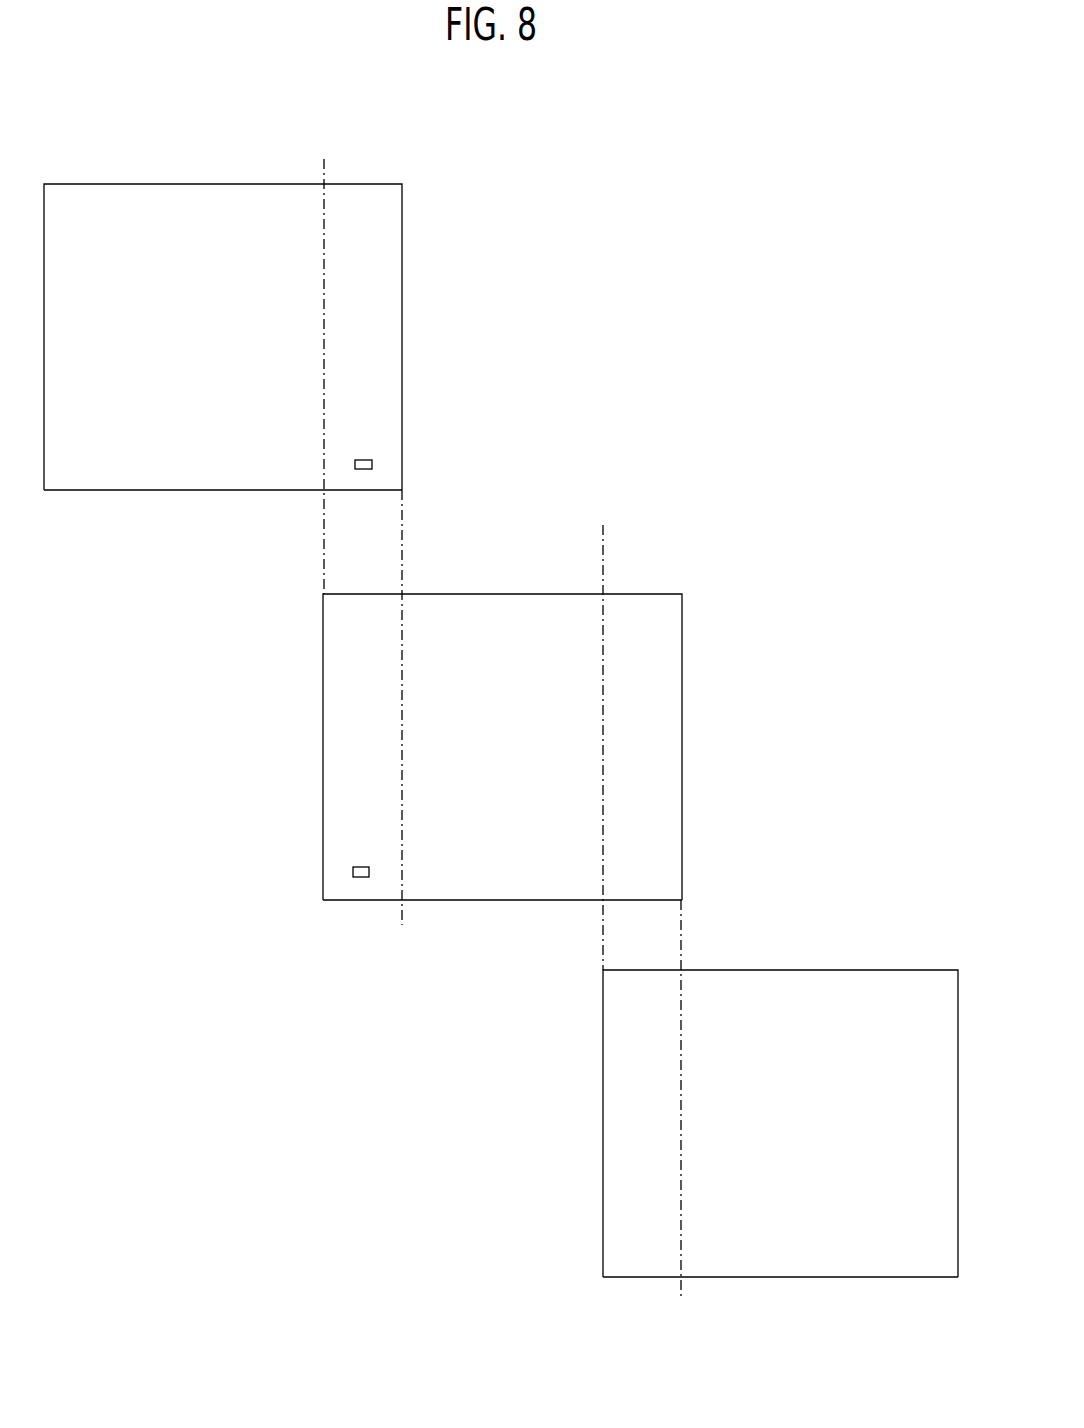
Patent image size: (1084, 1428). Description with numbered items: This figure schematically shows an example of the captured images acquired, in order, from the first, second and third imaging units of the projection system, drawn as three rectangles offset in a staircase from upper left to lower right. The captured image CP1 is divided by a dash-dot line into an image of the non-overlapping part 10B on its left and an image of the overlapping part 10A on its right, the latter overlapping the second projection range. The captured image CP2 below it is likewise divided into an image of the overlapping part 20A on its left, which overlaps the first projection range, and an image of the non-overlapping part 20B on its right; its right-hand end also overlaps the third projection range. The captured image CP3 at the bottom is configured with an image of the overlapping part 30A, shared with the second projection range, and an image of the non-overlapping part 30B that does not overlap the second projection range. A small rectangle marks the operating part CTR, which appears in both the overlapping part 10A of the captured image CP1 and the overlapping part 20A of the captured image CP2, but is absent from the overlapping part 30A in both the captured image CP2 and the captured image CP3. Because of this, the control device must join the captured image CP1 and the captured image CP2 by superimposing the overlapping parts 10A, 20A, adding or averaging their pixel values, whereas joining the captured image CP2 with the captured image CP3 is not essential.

The captured image CP1 is at (207, 184).
The captured image CP2 is at (323, 702).
The captured image CP3 is at (603, 1078).
The operating part CTR is at (370, 460).
The overlapping part 10A is at (365, 475).
The non-overlapping part 10B is at (257, 475).
The overlapping part 20A is at (358, 888).
The non-overlapping part 20B is at (433, 888).
The overlapping part 30A is at (637, 1263).
The non-overlapping part 30B is at (713, 1263).